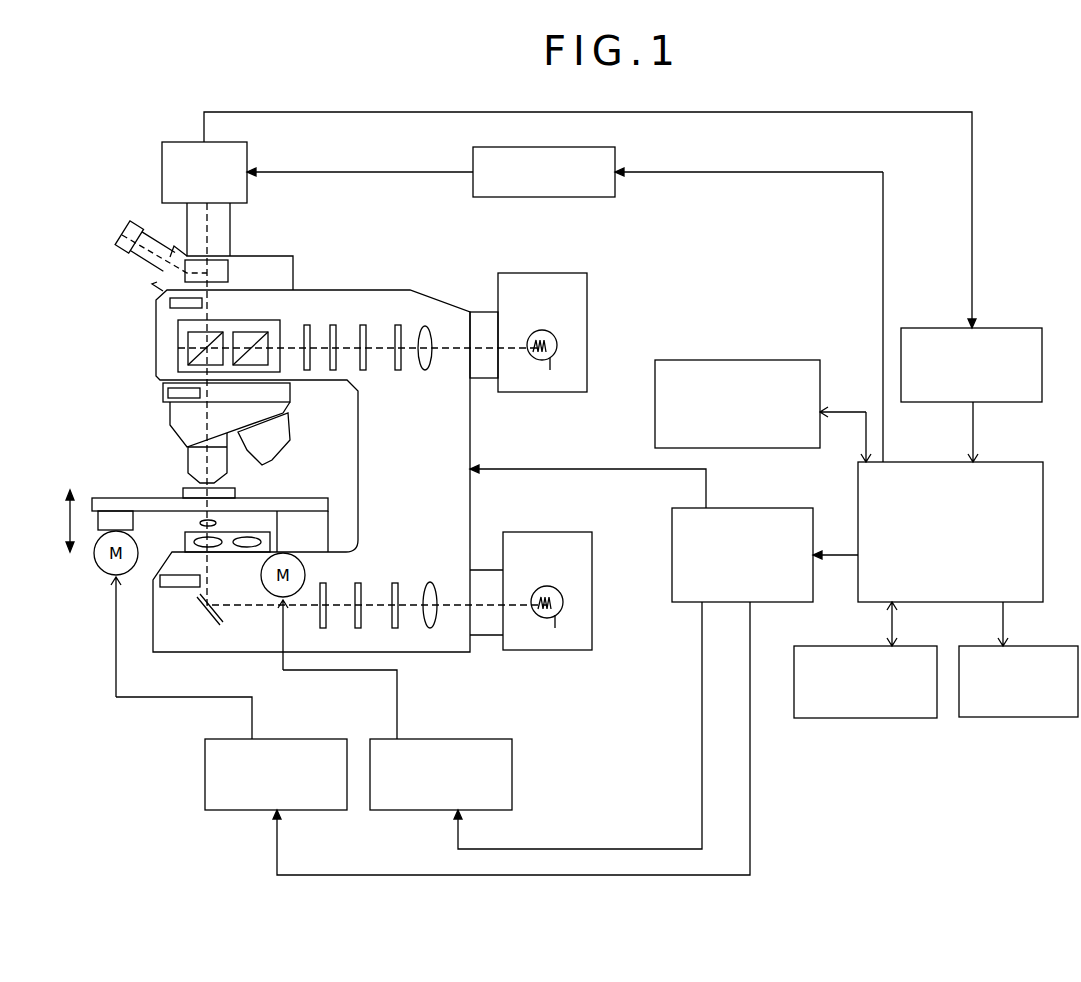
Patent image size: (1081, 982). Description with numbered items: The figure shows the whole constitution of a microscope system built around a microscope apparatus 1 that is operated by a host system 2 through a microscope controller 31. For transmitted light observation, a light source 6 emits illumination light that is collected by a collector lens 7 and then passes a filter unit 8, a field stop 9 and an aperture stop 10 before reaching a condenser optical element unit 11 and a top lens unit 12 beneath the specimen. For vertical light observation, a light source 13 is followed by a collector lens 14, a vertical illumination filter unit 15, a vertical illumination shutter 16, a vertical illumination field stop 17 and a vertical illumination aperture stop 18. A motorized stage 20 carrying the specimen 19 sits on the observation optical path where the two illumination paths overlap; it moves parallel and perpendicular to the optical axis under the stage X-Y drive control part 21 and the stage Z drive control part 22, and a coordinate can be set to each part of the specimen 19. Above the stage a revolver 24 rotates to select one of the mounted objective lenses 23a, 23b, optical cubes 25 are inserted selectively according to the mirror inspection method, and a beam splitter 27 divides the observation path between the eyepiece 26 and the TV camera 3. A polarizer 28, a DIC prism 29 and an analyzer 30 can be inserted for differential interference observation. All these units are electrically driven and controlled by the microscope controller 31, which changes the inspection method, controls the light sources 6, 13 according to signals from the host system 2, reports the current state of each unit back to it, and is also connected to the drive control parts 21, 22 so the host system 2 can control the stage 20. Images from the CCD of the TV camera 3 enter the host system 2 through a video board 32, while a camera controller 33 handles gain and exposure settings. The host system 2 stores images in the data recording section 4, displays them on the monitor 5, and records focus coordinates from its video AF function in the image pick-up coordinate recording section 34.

The microscope apparatus 1 is at (350, 284).
The host system 2 is at (963, 532).
The TV camera 3 is at (178, 142).
The data recording section 4 is at (865, 696).
The monitor 5 is at (1018, 696).
The light source for transmitting light illumination 6 is at (531, 577).
The collector lens 7 is at (430, 593).
The filter unit for transmitting light 8 is at (395, 593).
The field stop for transmitting light 9 is at (358, 593).
The aperture stop for transmitting light 10 is at (325, 593).
The condenser optical element unit 11 is at (180, 571).
The top lens unit 12 is at (212, 536).
The light source for vertical light illumination 13 is at (531, 320).
The collector lens 14 is at (429, 335).
The vertical illumination filter unit 15 is at (402, 335).
The vertical illumination shutter 16 is at (366, 335).
The vertical illumination field stop 17 is at (336, 335).
The vertical illumination aperture stop 18 is at (307, 335).
The specimen 19 is at (224, 485).
The motorized stage 20 is at (211, 521).
The stage X-Y drive control part 21 is at (269, 764).
The stage Z drive control part 22 is at (447, 764).
The objective lens 23a is at (186, 458).
The objective lens 23b is at (284, 439).
The revolver 24 is at (210, 415).
The optical cube 25 is at (201, 346).
The eyepiece 26 is at (141, 237).
The beam splitter 27 is at (222, 272).
The polarizer 28 is at (218, 598).
The DIC prism 29 is at (164, 395).
The analyzer 30 is at (165, 304).
The microscope controller 31 is at (672, 602).
The video board 32 is at (987, 355).
The camera controller 33 is at (544, 159).
The image pick-up coordinate recording section 34 is at (737, 392).